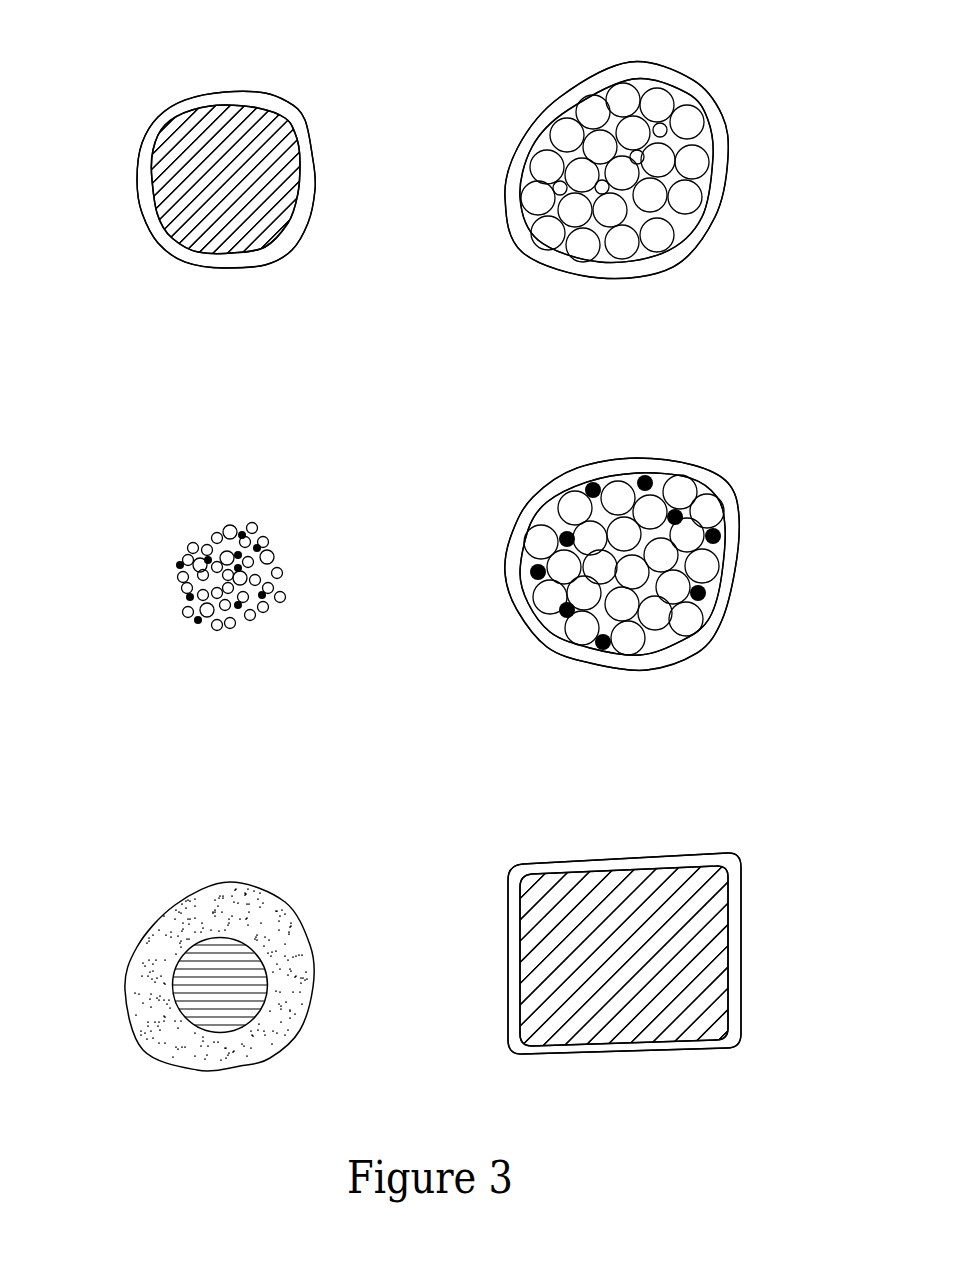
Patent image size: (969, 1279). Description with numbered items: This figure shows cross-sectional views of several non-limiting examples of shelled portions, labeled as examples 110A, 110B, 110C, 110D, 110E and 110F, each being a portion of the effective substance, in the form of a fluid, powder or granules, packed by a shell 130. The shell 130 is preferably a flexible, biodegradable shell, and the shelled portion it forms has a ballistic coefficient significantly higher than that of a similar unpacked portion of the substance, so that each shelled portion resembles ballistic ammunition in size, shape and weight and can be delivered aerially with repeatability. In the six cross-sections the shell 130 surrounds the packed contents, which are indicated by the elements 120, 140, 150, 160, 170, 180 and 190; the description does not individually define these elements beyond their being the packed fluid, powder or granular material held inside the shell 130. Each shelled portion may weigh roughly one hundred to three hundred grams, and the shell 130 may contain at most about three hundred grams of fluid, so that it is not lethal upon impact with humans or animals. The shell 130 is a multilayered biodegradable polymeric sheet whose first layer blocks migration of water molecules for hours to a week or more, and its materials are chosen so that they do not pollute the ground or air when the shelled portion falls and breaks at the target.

The cable cross-section with solid core 110A is at (250, 330).
The cable cross-section with multiple strands 110B is at (635, 331).
The cable cross-section of bundled fibers 110C is at (250, 728).
The cable cross-section with strands and fibers 110D is at (635, 727).
The cable cross-section with core and filled matrix 110E is at (250, 1142).
The rectangular cable cross-section 110F is at (632, 1143).
The core 120 is at (165, 187).
The shell 130 is at (277, 98).
The strands 140 is at (533, 192).
The fibers 150 is at (208, 543).
The strands 160 is at (617, 492).
The fibers 170 is at (562, 607).
The matrix material 180 is at (178, 897).
The core 190 is at (247, 968).